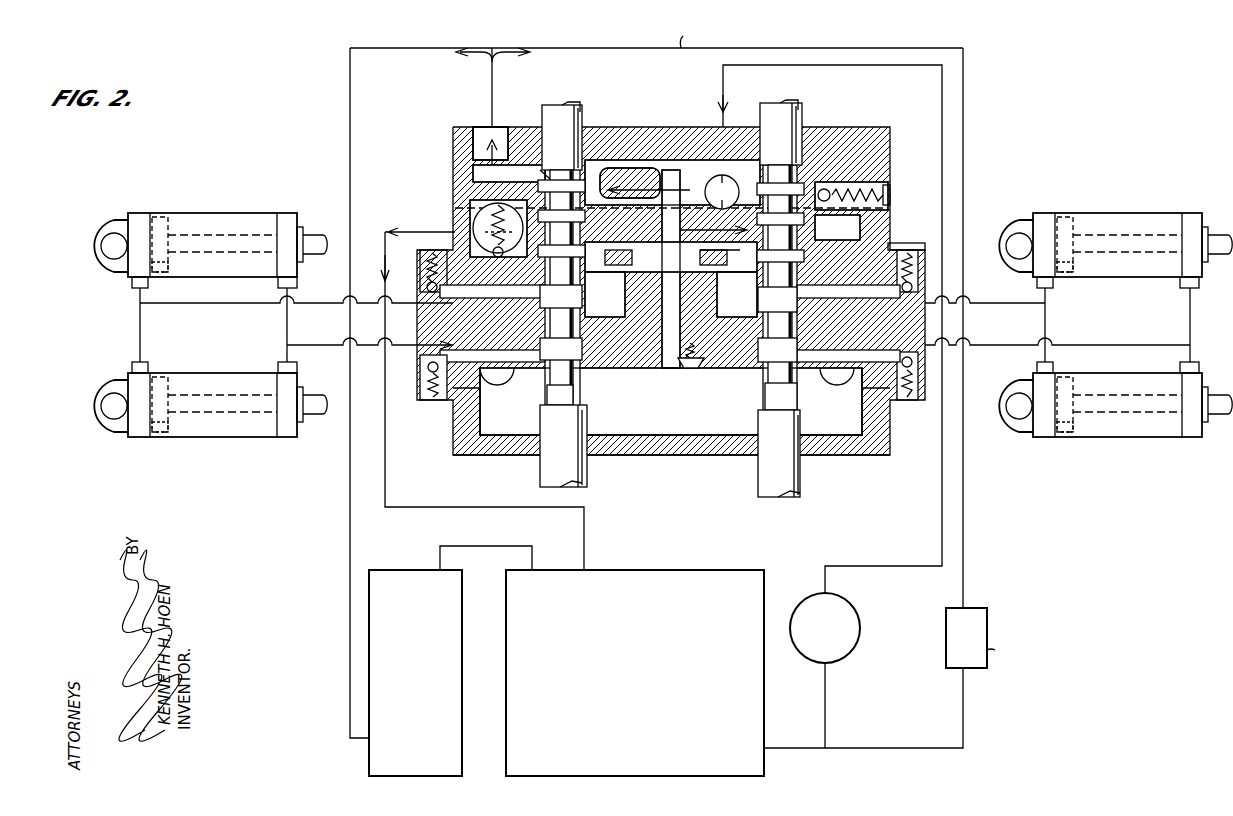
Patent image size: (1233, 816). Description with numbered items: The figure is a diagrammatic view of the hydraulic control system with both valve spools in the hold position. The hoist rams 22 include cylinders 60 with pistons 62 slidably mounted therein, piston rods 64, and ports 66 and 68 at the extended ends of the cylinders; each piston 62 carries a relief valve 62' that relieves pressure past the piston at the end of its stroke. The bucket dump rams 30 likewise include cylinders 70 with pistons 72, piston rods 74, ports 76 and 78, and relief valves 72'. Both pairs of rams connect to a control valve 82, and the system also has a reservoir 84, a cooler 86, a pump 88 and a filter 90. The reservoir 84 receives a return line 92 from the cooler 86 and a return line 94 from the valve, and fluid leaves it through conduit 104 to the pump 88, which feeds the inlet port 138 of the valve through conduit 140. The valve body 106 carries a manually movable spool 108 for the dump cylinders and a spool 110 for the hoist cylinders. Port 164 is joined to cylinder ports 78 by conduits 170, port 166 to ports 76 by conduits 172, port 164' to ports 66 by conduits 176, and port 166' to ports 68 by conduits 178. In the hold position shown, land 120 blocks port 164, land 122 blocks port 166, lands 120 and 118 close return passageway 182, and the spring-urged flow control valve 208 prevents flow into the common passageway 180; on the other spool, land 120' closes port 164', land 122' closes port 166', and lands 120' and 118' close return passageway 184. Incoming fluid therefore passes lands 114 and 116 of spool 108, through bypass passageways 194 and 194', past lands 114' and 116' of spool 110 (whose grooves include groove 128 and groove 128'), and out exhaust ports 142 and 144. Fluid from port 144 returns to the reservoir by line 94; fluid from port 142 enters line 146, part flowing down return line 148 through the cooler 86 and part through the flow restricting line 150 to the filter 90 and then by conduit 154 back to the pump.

The hydraulic rams 22 is at (108, 372).
The hydraulic rams 30 is at (1222, 350).
The cylinders 60 is at (197, 211).
The pistons 62 is at (154, 226).
The relief valves 62' is at (136, 226).
The piston rods 64 is at (245, 235).
The pressure fluid inlet and outlet port 66 is at (148, 287).
The pressure fluid inlet and outlet port 68 is at (280, 283).
The cylinders 70 is at (1127, 212).
The pistons 72 is at (1068, 226).
The relief valve 72' is at (1045, 226).
The piston rods 74 is at (1105, 235).
The inlet and/or outlet port 76 is at (1182, 283).
The inlet and/or outlet port 78 is at (1053, 287).
The control valve 82 is at (668, 112).
The reservoir for hydraulic fluid 84 is at (635, 673).
The cooler for hydraulic fluid 86 is at (415, 673).
The pump 88 is at (825, 628).
The filter 90 is at (997, 638).
The return line 92 is at (505, 544).
The return line 94 is at (585, 540).
The conduit 104 is at (824, 698).
The valve body 106 is at (676, 460).
The manually movable spool 108 is at (798, 293).
The valve spool 110 is at (562, 275).
The land 114 is at (780, 180).
The land 116 is at (780, 210).
The land 118 is at (780, 247).
The land 120 is at (777, 299).
The land 122 is at (777, 350).
The land 114' is at (561, 170).
The land 116' is at (561, 227).
The land 118' is at (561, 260).
The land 120' is at (561, 296).
The land 122' is at (561, 349).
The groove 128 is at (873, 183).
The groove 128' is at (517, 176).
The inlet port 138 is at (720, 175).
The pressure fluid conduit 140 is at (872, 559).
The exhaust port 142 is at (478, 124).
The exhaust port 144 is at (485, 212).
The return line 146 is at (492, 98).
The return line 148 is at (336, 393).
The flow restricting line 150 is at (655, 46).
The conduit 154 is at (892, 756).
The outlet and return port 164 is at (985, 309).
The outlet and return port 166 is at (1057, 351).
The outlet and return port 164' is at (421, 312).
The outlet and return port 166' is at (420, 352).
The conduits 170 is at (1024, 302).
The conduits 172 is at (1126, 342).
The conduits 176 is at (236, 302).
The conduits 178 is at (290, 344).
The common passageway 180 is at (671, 401).
The return passageway 182 is at (909, 257).
The return passageway 184 is at (471, 264).
The bypass passageway 194 is at (645, 144).
The bypass passageway 194' is at (707, 220).
The pressure responsive flow control valve 208 is at (692, 368).